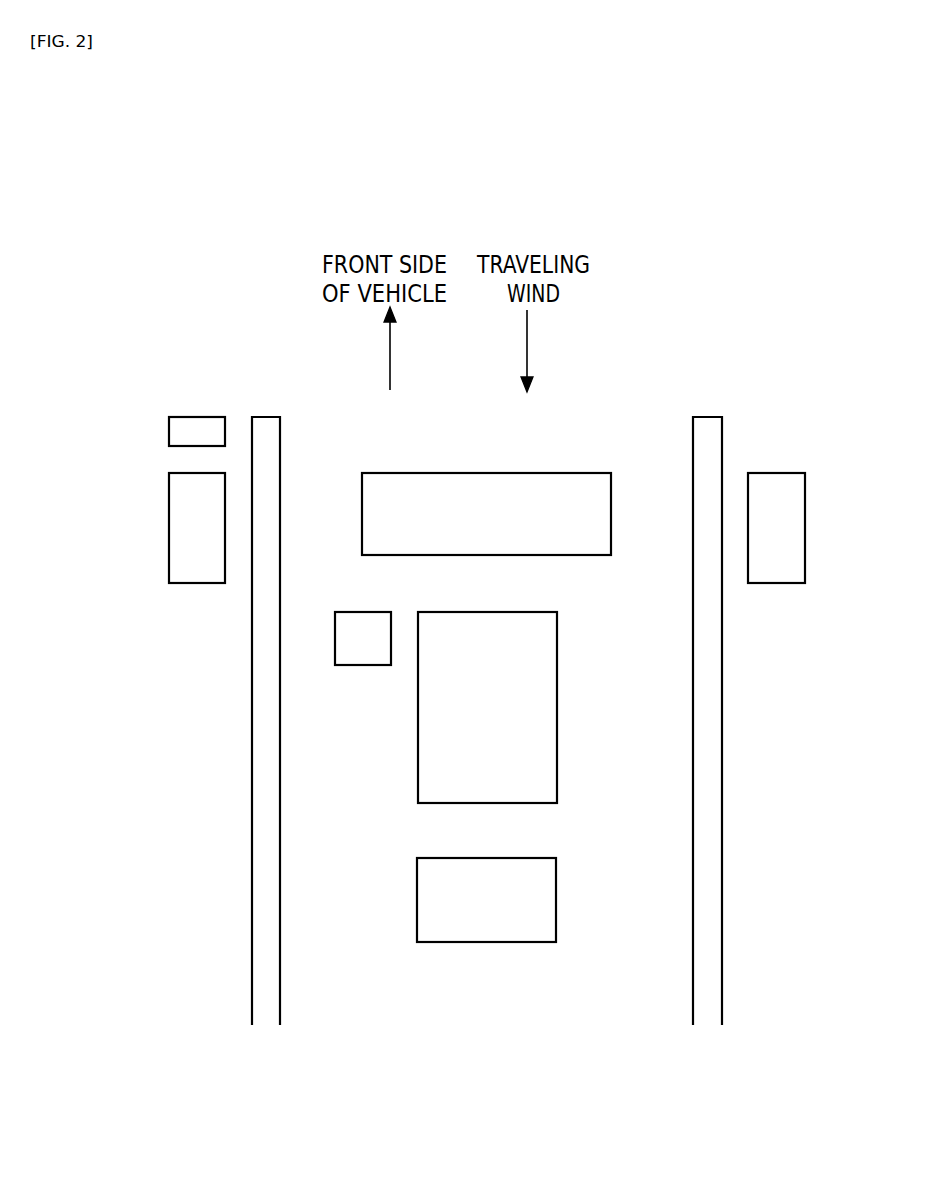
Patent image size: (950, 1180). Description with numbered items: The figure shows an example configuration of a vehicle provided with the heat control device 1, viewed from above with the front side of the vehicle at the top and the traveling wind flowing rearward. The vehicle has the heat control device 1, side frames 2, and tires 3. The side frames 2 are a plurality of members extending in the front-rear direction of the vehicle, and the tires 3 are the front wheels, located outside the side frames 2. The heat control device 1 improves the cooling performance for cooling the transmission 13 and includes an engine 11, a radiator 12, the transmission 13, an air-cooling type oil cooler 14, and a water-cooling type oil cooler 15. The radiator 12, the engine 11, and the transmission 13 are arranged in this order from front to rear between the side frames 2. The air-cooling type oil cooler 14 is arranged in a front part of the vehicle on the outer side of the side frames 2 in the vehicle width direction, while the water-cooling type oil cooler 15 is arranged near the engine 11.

The heat control device 1 is at (618, 406).
The side frames 2 is at (267, 448).
The tires 3 is at (182, 502).
The engine 11 is at (545, 668).
The radiator 12 is at (555, 485).
The transmission 13 is at (542, 887).
The air-cooling type oil cooler 14 is at (198, 430).
The water-cooling type oil cooler 15 is at (365, 655).